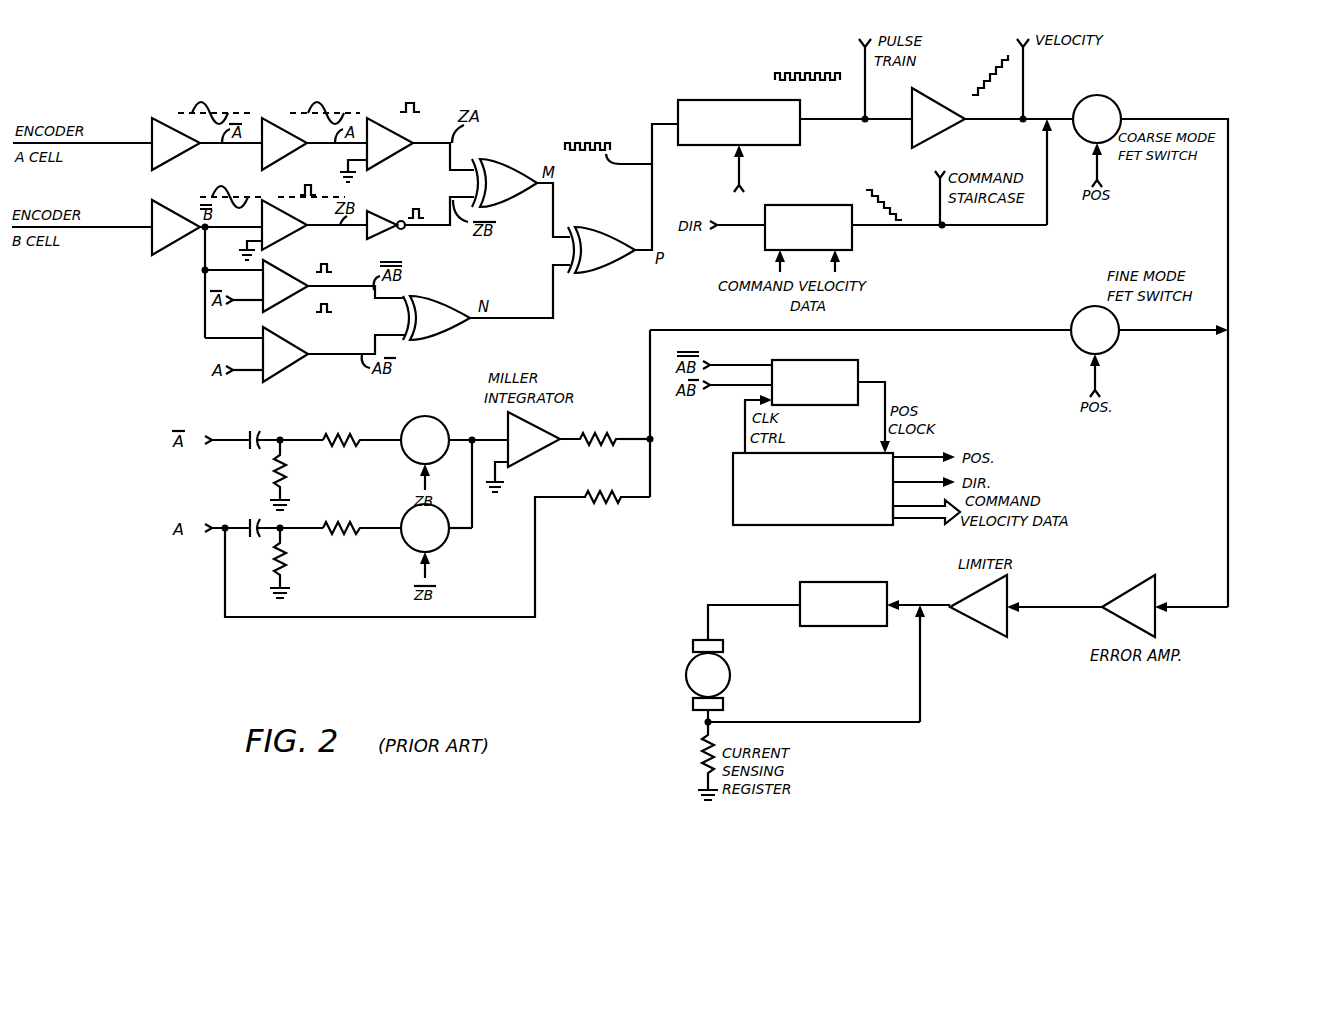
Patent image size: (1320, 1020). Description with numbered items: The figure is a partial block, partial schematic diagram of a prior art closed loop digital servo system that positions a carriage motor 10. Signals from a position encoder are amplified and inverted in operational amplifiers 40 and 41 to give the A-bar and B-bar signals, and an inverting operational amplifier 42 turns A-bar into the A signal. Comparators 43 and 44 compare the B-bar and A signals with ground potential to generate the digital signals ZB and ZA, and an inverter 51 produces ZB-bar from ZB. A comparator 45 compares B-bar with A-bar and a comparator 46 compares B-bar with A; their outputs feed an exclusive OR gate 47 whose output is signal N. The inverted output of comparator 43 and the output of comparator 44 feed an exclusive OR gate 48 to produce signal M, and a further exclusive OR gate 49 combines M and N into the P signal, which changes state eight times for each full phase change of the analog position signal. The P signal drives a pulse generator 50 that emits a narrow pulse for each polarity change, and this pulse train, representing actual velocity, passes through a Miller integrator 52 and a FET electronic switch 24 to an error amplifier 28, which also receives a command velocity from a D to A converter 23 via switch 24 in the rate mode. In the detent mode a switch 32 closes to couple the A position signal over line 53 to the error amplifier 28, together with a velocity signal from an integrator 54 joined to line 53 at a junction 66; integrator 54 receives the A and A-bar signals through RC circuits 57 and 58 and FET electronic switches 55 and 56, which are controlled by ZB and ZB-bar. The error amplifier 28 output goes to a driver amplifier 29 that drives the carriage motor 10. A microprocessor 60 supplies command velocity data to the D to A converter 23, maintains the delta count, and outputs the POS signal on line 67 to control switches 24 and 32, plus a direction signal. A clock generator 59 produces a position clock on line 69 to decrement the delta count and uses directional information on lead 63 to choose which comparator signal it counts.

The carriage motor 10 is at (688, 666).
The D to A converter 23 is at (806, 205).
The FET electronic switch 24 is at (1113, 105).
The error amplifier 28 is at (1128, 590).
The driver amplifier 29 is at (836, 582).
The switch 32 is at (1078, 315).
The operational amplifier 40 is at (158, 118).
The operational amplifier 41 is at (160, 190).
The inverting operational amplifier 42 is at (282, 118).
The comparator 43 is at (293, 233).
The comparator 44 is at (387, 118).
The comparator 45 is at (295, 292).
The comparator 46 is at (295, 362).
The exclusive OR gate 47 is at (437, 298).
The exclusive OR gate 48 is at (502, 160).
The exclusive OR gate 49 is at (597, 272).
The pulse generator 50 is at (711, 100).
The inverter 51 is at (388, 233).
The Miller integrator 52 is at (911, 143).
The line 53 is at (536, 561).
The integrator 54 is at (524, 461).
The FET electronic switch 55 is at (432, 416).
The FET electronic switch 56 is at (443, 546).
The RC circuit 57 is at (296, 453).
The RC circuit 58 is at (296, 541).
The clock generator 59 is at (858, 362).
The microprocessor 60 is at (733, 513).
The lead 63 is at (911, 484).
The junction 66 is at (652, 438).
The line 67 is at (900, 458).
The line 69 is at (890, 387).